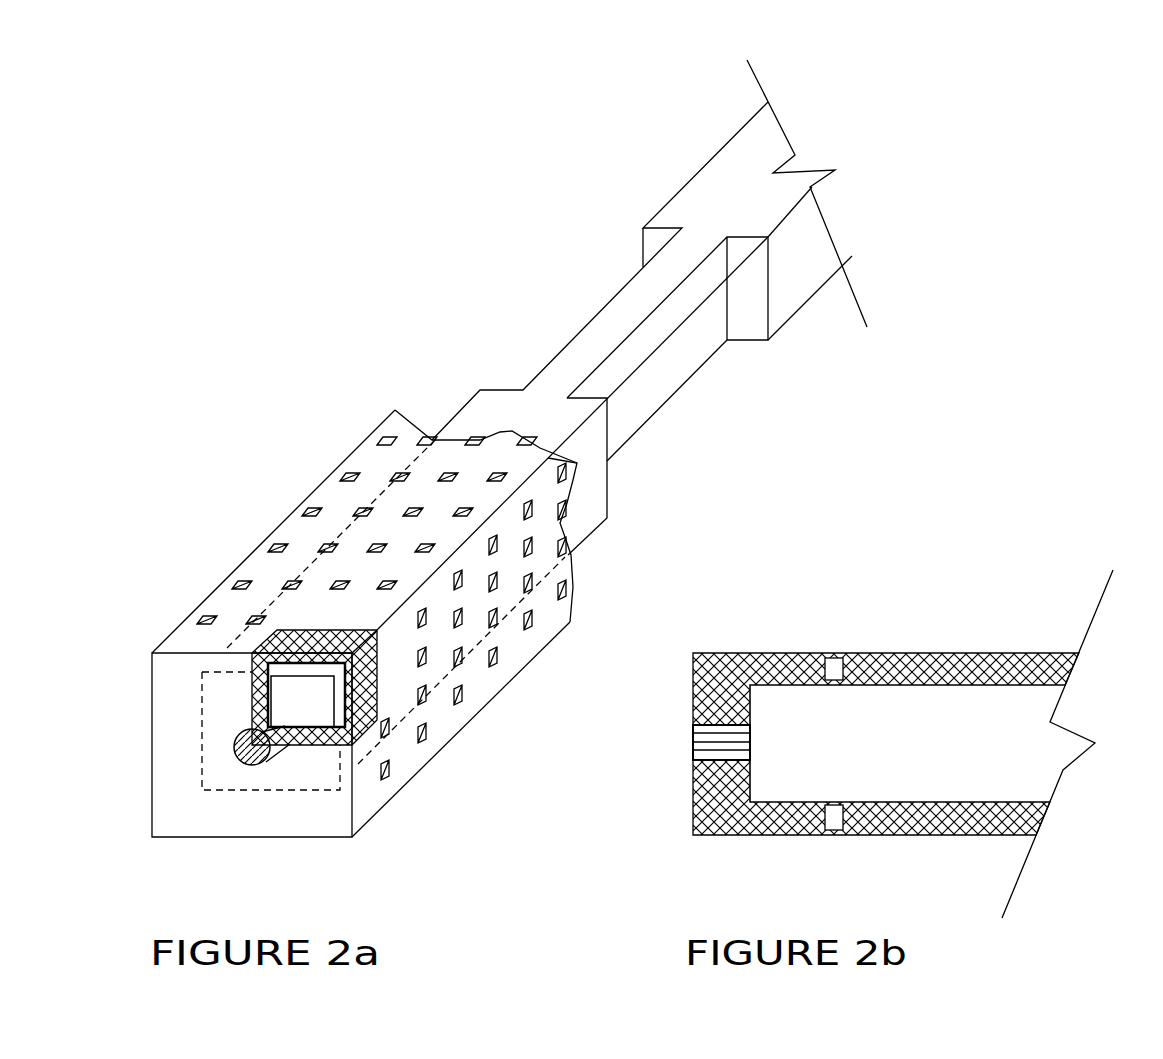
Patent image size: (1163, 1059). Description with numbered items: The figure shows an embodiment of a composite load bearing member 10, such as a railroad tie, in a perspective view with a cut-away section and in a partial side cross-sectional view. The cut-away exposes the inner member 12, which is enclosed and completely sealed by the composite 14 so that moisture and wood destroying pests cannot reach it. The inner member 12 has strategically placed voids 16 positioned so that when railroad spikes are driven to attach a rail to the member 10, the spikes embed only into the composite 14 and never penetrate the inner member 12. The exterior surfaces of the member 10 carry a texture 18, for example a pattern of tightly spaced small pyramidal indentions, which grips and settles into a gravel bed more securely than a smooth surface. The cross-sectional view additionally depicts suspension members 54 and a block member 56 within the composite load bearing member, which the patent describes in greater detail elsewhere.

In FIG. 2A, the composite load bearing member 10 is at (175, 530).
In FIG. 2B, the composite load bearing member 10 is at (740, 590).
In FIG. 2A, the inner member 12 is at (792, 280).
In FIG. 2B, the inner member 12 is at (777, 772).
In FIG. 2A, the composite 14 is at (314, 687).
In FIG. 2B, the composite 14 is at (930, 650).
In FIG. 2A, the voids 16 is at (630, 387).
In FIG. 2A, the texture 18 is at (363, 510).
In FIG. 2B, the suspension members 54 is at (835, 807).
In FIG. 2A, the block member 56 is at (240, 747).
In FIG. 2B, the block member 56 is at (695, 745).